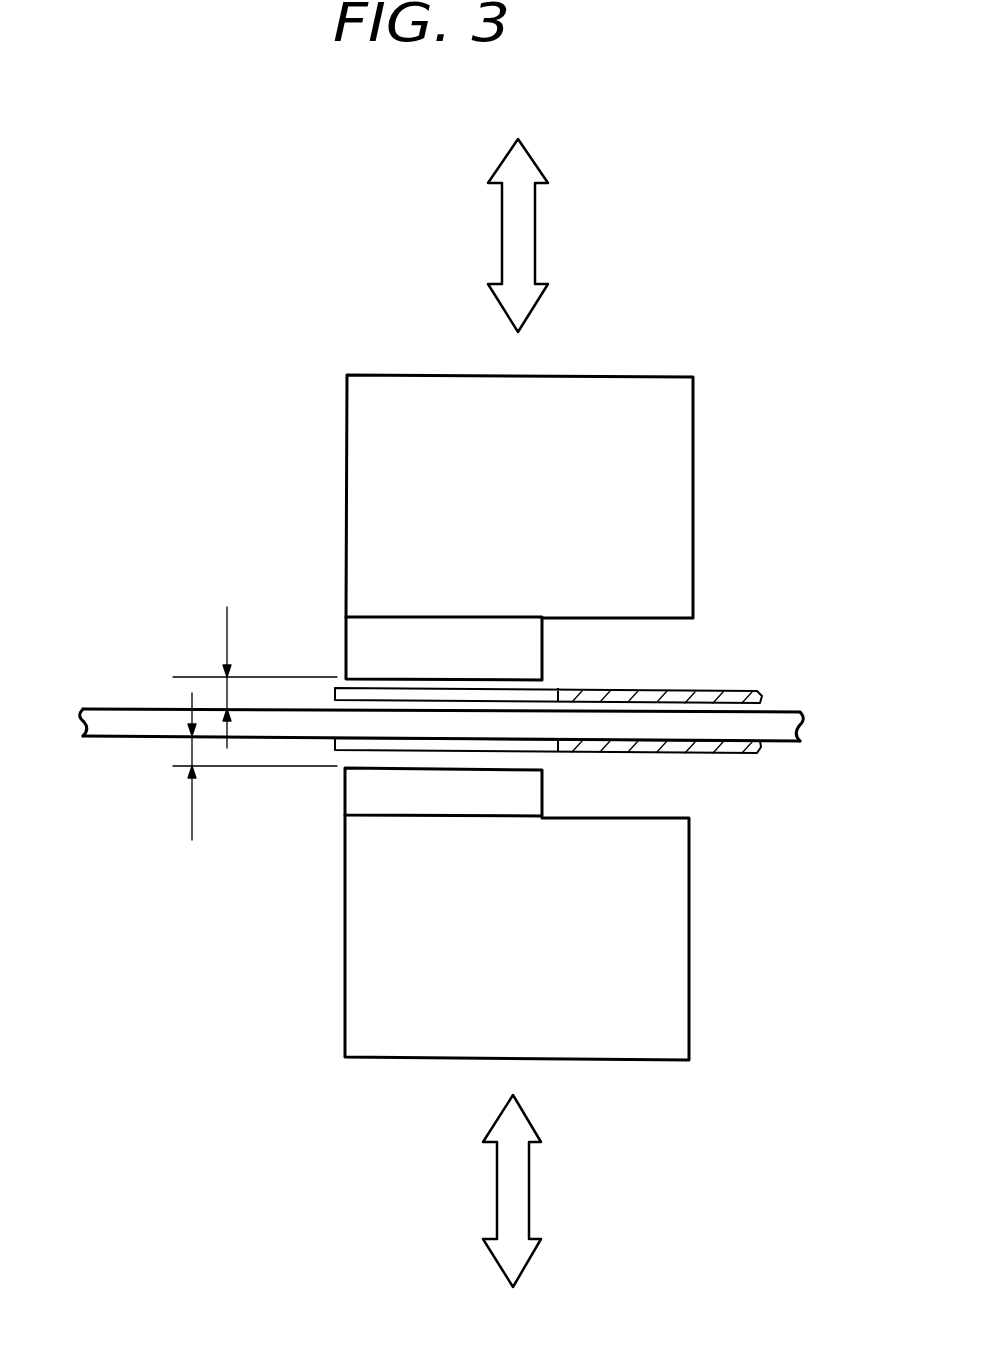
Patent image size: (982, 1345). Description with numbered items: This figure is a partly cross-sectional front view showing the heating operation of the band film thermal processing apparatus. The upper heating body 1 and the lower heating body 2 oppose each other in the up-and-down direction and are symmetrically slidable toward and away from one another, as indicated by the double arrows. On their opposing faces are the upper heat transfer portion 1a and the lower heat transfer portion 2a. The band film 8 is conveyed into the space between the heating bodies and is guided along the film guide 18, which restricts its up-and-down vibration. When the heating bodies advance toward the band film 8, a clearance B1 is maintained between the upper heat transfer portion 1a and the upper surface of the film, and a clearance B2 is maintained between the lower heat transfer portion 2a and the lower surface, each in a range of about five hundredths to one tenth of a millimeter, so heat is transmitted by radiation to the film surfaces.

The upper heating body 1 is at (403, 390).
The upper heat transfer portion 1a is at (357, 641).
The lower heating body 2 is at (388, 1045).
The lower heat transfer portion 2a is at (357, 790).
The band film 8 is at (111, 718).
The film guide 18 is at (735, 697).
The gap dimension B1 is at (255, 677).
The gap dimension B2 is at (247, 766).